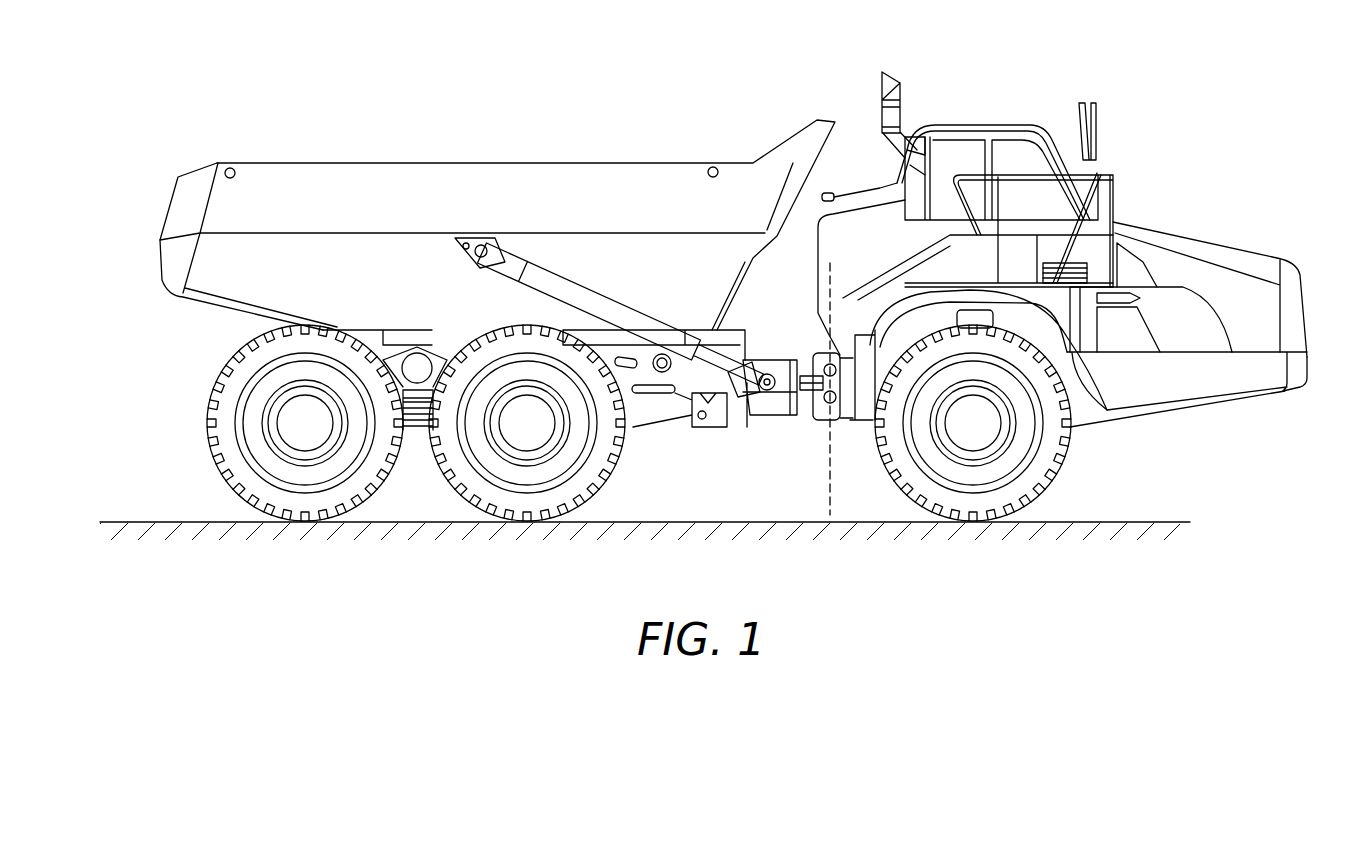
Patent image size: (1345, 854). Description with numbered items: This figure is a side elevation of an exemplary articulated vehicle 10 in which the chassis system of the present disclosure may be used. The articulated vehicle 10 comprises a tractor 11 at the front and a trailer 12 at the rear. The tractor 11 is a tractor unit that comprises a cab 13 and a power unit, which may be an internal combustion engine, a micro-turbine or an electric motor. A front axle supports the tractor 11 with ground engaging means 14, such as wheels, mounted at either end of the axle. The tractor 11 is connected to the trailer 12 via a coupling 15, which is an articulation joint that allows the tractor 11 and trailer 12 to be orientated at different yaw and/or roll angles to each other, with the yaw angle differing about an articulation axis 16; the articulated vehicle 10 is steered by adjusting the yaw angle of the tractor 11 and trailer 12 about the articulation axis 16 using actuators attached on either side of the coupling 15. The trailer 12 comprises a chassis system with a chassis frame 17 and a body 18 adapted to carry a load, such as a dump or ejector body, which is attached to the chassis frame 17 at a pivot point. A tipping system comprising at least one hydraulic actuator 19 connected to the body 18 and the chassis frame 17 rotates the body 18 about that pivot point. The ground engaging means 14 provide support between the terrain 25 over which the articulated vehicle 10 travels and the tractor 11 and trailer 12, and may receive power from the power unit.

The articulated vehicle 10 is at (938, 62).
The tractor 11 is at (1211, 192).
The trailer 12 is at (521, 62).
The cab 13 is at (1000, 127).
The ground engaging means 14 is at (223, 467).
The coupling 15 is at (810, 427).
The articulation axis 16 is at (830, 490).
The chassis frame 17 is at (633, 380).
The body 18 is at (393, 162).
The hydraulic actuator 19 is at (630, 305).
The terrain 25 is at (1165, 520).